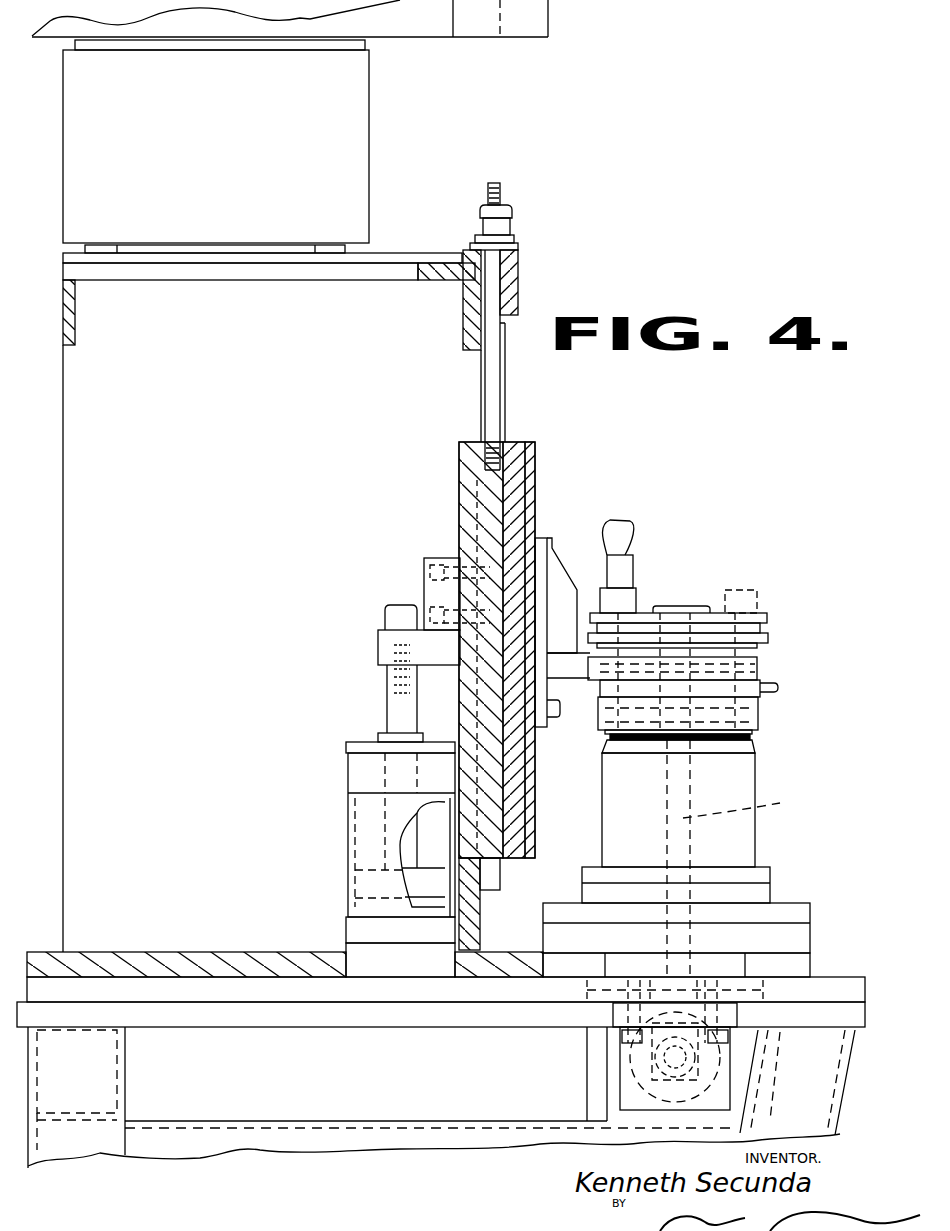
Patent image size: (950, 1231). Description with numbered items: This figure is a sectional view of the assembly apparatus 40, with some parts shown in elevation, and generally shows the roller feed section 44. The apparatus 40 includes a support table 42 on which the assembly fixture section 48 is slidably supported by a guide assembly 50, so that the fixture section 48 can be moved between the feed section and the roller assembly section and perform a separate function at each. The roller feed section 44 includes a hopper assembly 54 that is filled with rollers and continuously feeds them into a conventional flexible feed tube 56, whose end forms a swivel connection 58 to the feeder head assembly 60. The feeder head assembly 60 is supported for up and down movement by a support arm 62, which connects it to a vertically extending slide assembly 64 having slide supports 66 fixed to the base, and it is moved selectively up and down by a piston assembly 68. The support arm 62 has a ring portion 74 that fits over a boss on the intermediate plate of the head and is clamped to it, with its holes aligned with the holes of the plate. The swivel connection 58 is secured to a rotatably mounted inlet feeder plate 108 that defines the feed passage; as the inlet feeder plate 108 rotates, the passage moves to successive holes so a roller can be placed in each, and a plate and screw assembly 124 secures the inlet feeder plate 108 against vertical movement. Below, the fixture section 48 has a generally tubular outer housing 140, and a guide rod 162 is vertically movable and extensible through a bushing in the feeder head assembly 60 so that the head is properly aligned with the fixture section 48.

The assembly apparatus 40 is at (733, 448).
The support table 42 is at (233, 1142).
The roller feed section 44 is at (733, 644).
The assembly fixture section 48 is at (716, 858).
The guide assembly 50 is at (820, 957).
The hopper assembly 54 is at (654, 506).
The flexible feed tube 56 is at (606, 522).
The swivel connection 58 is at (622, 567).
The feeder head assembly 60 is at (790, 622).
The support arm 62 is at (589, 675).
The slide assembly 64 is at (550, 456).
The slide supports 66 is at (508, 880).
The piston assembly 68 is at (345, 770).
The ring portion 74 is at (760, 672).
The inlet feeder plate 108 is at (735, 612).
The plate and screw assembly 124 is at (694, 608).
The outer housing 140 is at (755, 790).
The guide rod 162 is at (760, 810).